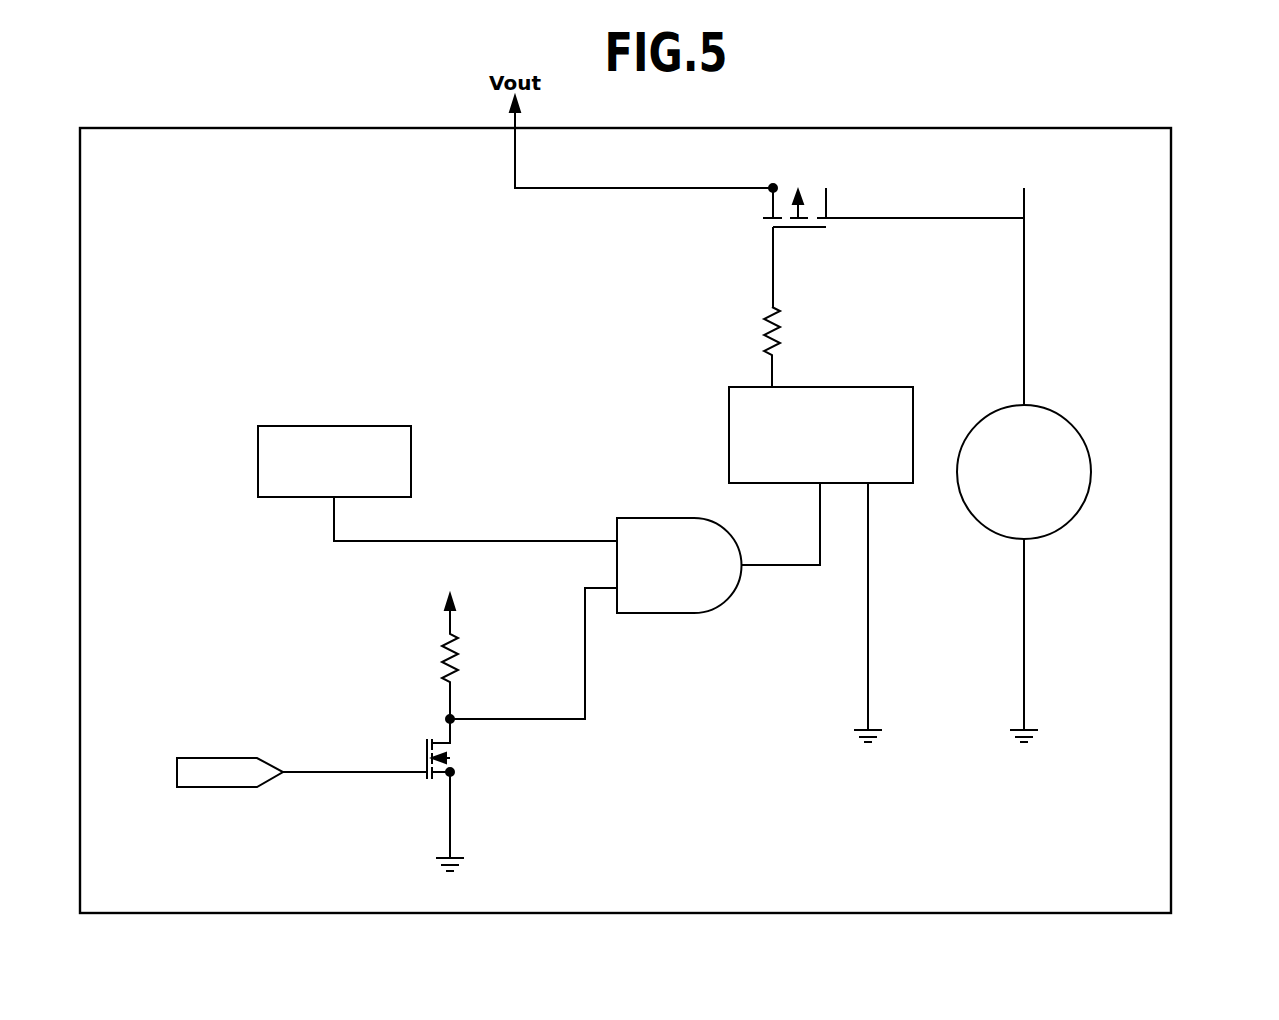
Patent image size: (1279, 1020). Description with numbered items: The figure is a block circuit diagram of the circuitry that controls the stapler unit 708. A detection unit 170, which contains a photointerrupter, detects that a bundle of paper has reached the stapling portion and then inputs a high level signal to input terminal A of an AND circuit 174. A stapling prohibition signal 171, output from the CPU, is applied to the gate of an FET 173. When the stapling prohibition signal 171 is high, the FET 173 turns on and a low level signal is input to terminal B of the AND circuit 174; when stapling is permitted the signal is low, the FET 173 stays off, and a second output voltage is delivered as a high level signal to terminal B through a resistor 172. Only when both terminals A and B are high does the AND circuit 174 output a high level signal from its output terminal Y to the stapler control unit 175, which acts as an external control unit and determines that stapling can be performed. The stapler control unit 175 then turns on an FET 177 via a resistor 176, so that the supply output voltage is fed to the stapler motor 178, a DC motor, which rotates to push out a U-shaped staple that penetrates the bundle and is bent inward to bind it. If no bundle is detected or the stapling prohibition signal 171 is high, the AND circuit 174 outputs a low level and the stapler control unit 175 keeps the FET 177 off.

The stapler unit 708 is at (1172, 345).
The detection unit 170 is at (333, 425).
The stapling prohibition signal 171 is at (214, 788).
The resistor 172 is at (460, 655).
The FET 173 is at (456, 745).
The AND circuit 174 is at (668, 517).
The stapler control unit 175 is at (845, 387).
The resistor 176 is at (765, 340).
The FET 177 is at (812, 190).
The stapler motor 178 is at (1056, 412).